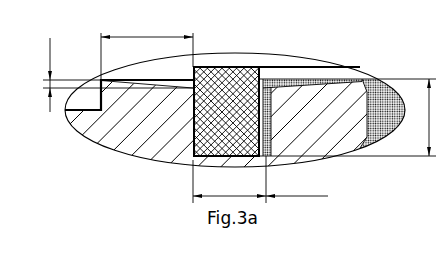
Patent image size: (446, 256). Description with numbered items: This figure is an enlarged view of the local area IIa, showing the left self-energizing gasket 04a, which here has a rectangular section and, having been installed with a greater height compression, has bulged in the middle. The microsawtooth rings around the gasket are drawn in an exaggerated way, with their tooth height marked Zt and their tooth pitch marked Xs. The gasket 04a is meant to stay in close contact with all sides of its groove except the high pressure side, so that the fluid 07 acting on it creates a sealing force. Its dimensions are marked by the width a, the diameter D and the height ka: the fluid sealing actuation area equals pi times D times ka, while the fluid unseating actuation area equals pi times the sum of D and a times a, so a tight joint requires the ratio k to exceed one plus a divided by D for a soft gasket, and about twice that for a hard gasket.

The self-energizing gasket 04a is at (262, 88).
The fluid 07 is at (387, 133).
The local area IIa is at (233, 88).
The tooth pitch Xs is at (147, 50).
The tooth height Zt is at (42, 75).
The sealing actuation height ka is at (420, 117).
The gasket width a is at (229, 179).
The gasket diameter D is at (297, 188).